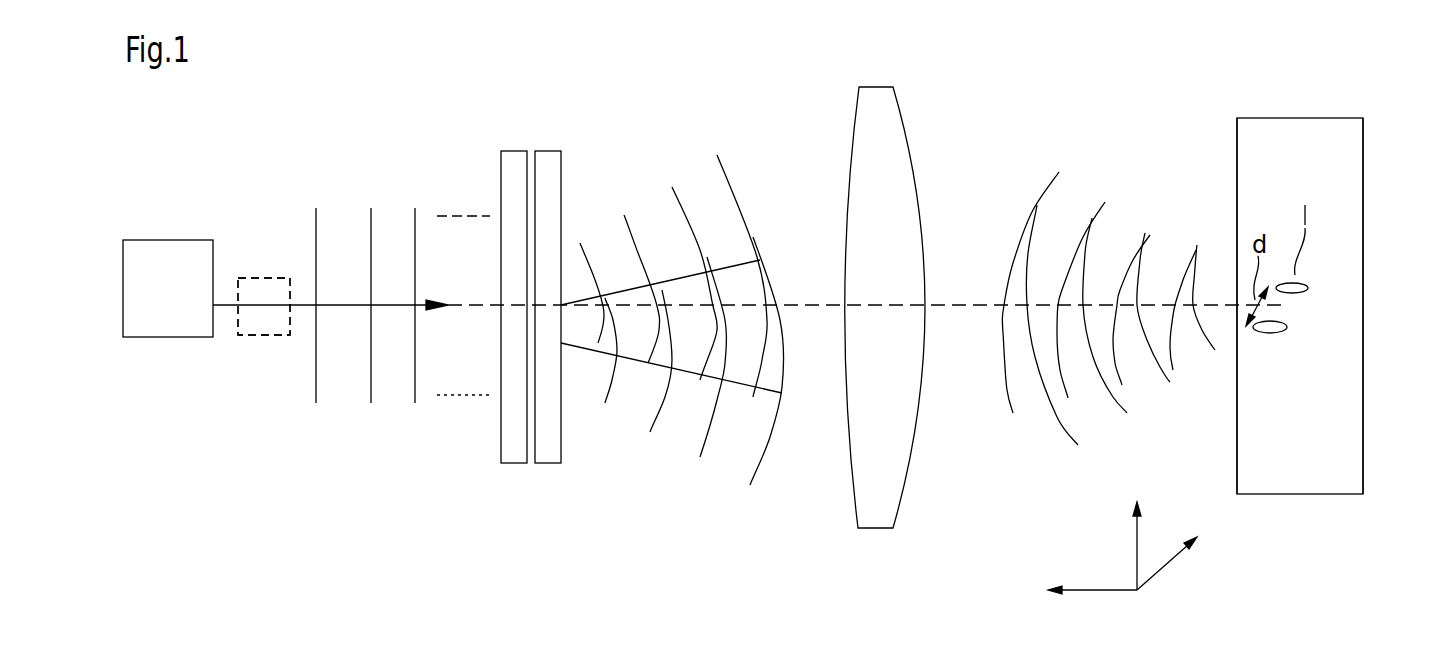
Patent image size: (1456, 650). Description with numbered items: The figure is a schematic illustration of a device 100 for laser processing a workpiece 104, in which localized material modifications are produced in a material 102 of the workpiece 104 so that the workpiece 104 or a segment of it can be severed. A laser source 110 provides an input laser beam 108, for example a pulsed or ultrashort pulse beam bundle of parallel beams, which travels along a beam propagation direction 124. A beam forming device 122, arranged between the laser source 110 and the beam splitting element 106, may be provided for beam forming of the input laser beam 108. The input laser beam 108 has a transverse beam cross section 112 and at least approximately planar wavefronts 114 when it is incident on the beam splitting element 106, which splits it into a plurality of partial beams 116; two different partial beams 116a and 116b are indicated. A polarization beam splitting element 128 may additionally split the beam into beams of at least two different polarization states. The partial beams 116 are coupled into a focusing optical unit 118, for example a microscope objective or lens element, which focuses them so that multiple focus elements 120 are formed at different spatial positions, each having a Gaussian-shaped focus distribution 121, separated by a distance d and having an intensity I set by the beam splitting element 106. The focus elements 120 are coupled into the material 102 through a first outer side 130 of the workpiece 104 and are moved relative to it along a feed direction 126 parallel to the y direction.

The device for laser processing a workpiece 100 is at (702, 60).
The material 102 is at (1297, 145).
The workpiece 104 is at (1343, 176).
The beam splitting element 106 is at (513, 149).
The input laser beam 108 is at (267, 335).
The laser source 110 is at (175, 240).
The transverse beam cross section 112 is at (462, 215).
The planar wavefronts 114 is at (371, 367).
The partial beams 116 is at (640, 458).
The first partial beam 116a is at (678, 277).
The second partial beam 116b is at (743, 387).
The focusing optical unit 118 is at (887, 120).
The focus elements 120 is at (1308, 287).
The focus distribution 121 is at (1297, 296).
The beam forming device 122 is at (263, 278).
The beam propagation direction 124 is at (422, 303).
The feed direction 126 is at (1157, 575).
The polarization beam splitting element 128 is at (549, 464).
The first outer side 130 is at (1237, 154).